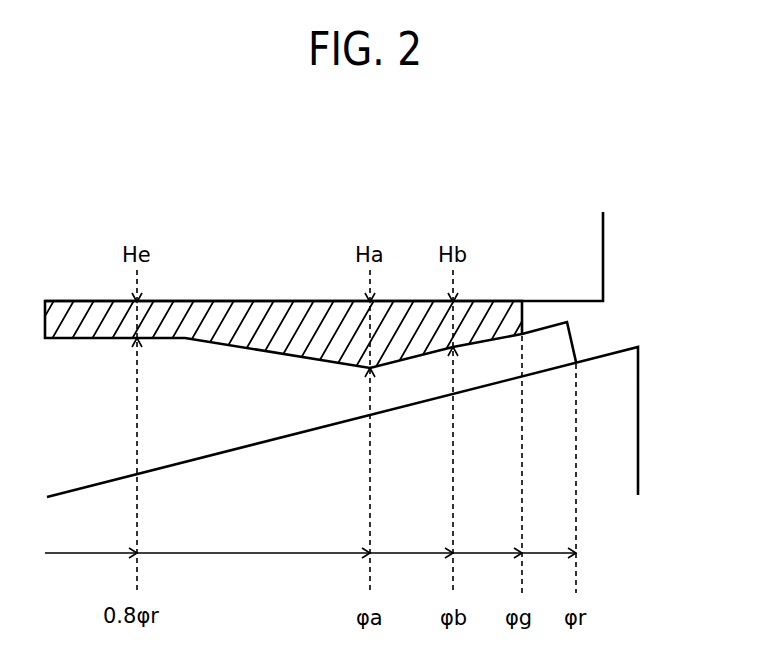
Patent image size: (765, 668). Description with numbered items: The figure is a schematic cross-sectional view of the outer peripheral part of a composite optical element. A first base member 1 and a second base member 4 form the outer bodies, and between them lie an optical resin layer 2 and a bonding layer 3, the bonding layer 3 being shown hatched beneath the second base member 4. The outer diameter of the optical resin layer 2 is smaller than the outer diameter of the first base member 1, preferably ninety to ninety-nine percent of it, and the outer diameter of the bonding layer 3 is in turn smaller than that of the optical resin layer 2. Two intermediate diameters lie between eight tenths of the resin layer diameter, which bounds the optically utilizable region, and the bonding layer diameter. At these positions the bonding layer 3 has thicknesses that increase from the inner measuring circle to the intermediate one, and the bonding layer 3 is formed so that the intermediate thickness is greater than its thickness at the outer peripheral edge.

The first base member 1 is at (608, 438).
The optical resin layer 2 is at (565, 347).
The bonding layer 3 is at (506, 319).
The second base member 4 is at (575, 245).